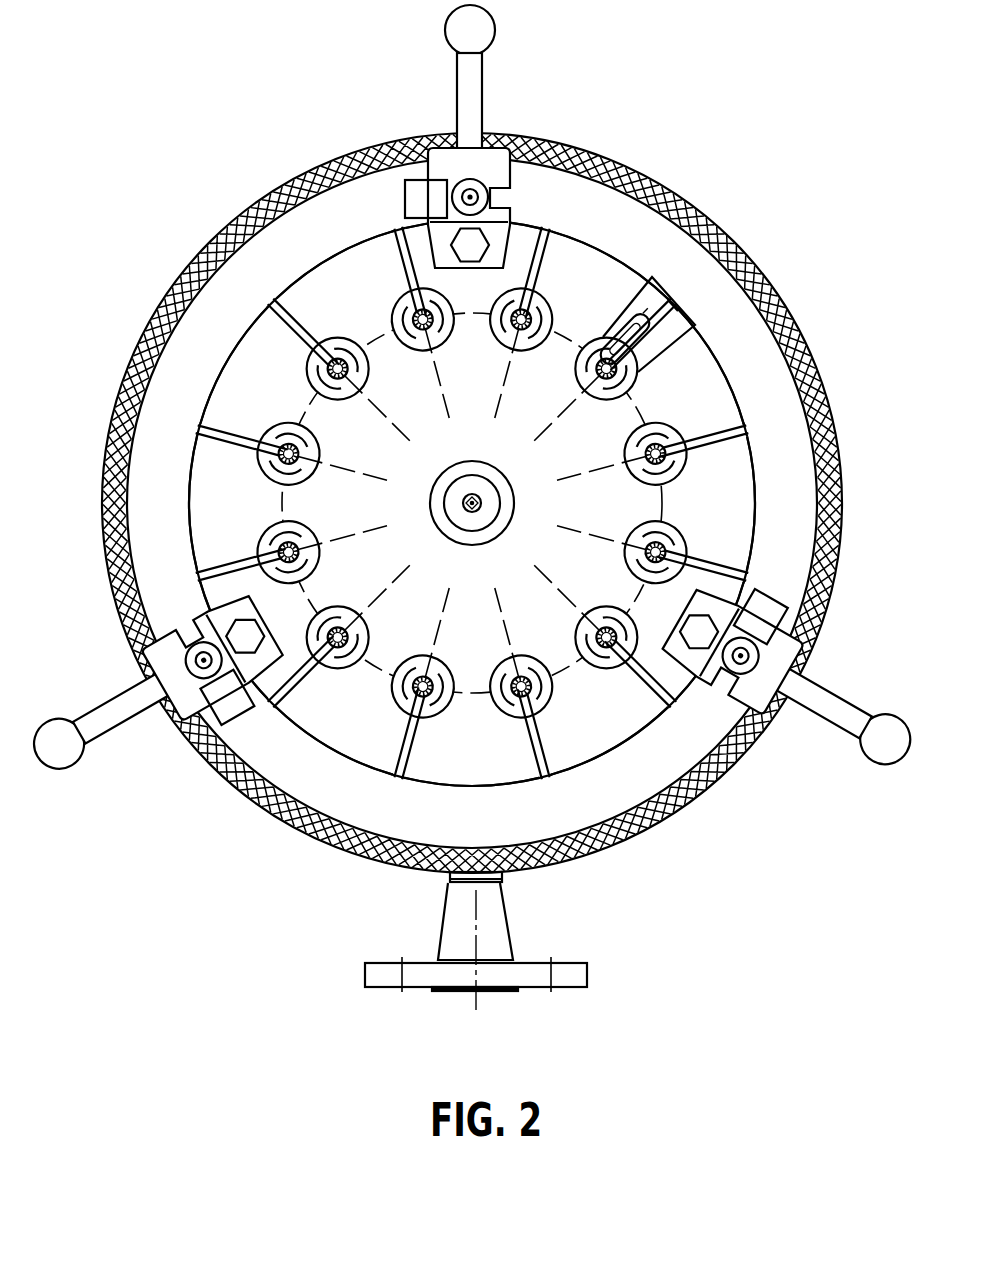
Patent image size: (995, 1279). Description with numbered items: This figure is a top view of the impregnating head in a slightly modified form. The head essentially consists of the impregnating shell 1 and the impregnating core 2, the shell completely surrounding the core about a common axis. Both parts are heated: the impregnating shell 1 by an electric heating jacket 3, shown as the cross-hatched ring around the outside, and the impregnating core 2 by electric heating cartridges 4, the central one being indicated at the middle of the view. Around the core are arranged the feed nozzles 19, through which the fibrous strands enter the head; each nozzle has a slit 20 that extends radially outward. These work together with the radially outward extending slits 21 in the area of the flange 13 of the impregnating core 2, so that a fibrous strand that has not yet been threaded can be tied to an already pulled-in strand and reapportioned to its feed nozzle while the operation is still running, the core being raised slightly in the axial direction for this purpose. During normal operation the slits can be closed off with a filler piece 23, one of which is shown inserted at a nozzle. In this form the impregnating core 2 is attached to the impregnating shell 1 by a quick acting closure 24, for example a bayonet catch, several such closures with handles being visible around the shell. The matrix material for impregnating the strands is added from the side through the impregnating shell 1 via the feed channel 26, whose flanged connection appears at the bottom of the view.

The impregnating shell 1 is at (327, 225).
The impregnating core 2 is at (407, 393).
The electric heating jacket 3 is at (707, 222).
The electric heating cartridges 4 is at (485, 507).
The flange 13 is at (597, 723).
The feed nozzles 19 is at (393, 695).
The slit 20 is at (410, 708).
The slits 21 is at (402, 752).
The filler piece 23 is at (657, 328).
The quick acting closure 24 is at (495, 163).
The feed channel 26 is at (480, 992).